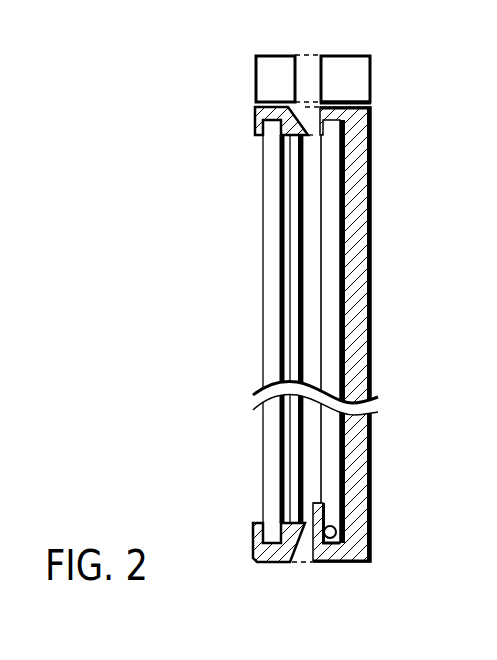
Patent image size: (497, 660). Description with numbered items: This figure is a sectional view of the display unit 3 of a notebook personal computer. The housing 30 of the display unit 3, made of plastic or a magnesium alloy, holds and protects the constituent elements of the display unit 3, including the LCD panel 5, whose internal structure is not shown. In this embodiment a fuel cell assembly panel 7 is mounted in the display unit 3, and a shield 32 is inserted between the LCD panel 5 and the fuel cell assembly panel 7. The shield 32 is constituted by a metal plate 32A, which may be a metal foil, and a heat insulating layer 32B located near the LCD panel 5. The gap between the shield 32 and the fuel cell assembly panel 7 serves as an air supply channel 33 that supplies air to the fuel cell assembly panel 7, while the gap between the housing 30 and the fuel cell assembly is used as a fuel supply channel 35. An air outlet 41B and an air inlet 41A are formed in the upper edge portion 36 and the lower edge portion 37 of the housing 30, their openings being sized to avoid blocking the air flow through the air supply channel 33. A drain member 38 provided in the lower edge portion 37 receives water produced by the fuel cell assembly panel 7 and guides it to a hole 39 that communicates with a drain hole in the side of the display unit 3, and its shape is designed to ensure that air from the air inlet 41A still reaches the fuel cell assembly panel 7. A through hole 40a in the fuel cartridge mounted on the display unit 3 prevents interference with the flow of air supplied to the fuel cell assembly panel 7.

The display unit 3 is at (410, 318).
The LCD panel 5 is at (270, 152).
The fuel cell assembly panel 7 is at (332, 306).
The housing 30 is at (263, 113).
The shield 32 is at (203, 197).
The metal plate 32A is at (284, 184).
The heat insulating layer 32B is at (298, 224).
The air supply channel 33 is at (312, 278).
The fuel supply channel 35 is at (345, 348).
The upper edge portion 36 is at (375, 97).
The lower edge portion 37 is at (373, 515).
The drain member 38 is at (357, 471).
The hole 39 is at (338, 526).
The through hole 40a is at (305, 62).
The air inlet 41A is at (310, 560).
The air outlet 41B is at (340, 97).